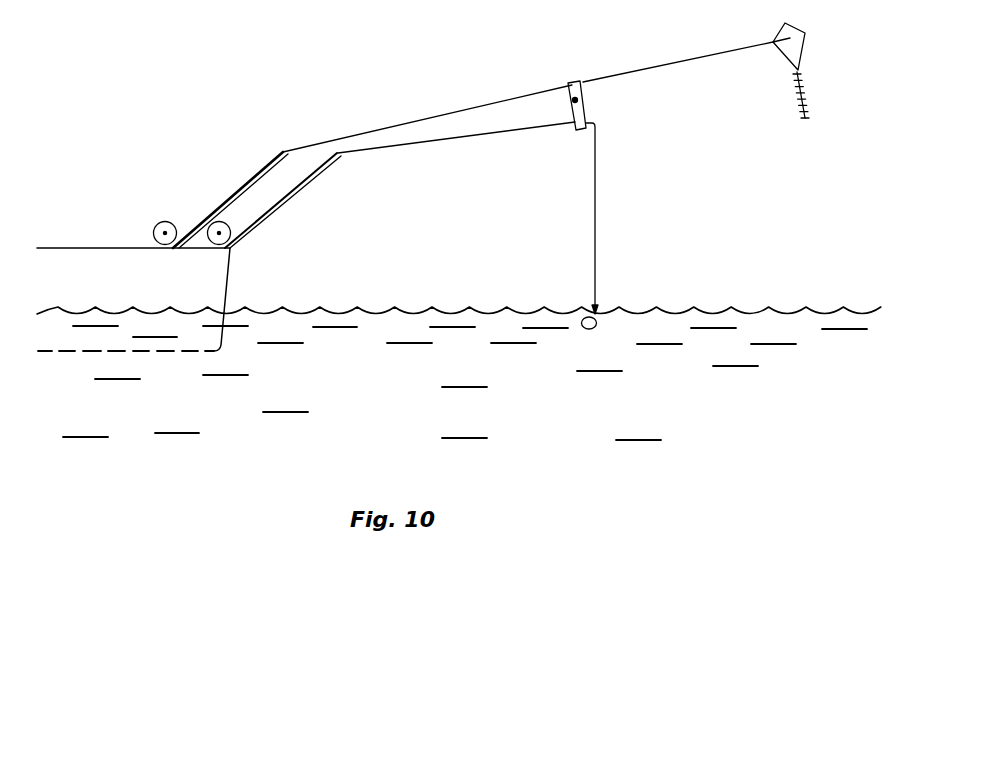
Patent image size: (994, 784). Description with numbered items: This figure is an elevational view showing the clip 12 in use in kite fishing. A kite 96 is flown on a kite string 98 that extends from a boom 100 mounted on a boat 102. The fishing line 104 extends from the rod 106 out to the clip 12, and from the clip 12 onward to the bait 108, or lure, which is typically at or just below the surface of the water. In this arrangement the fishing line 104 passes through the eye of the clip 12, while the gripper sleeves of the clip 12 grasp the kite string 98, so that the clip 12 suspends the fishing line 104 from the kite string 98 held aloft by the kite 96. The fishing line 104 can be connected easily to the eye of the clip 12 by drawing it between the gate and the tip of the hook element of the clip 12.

The clip 12 is at (567, 79).
The kite 96 is at (803, 50).
The kite string 98 is at (417, 122).
The boom 100 is at (243, 182).
The boat 102 is at (232, 265).
The fishing line 104 is at (423, 142).
The rod 106 is at (275, 210).
The bait 108 is at (597, 321).